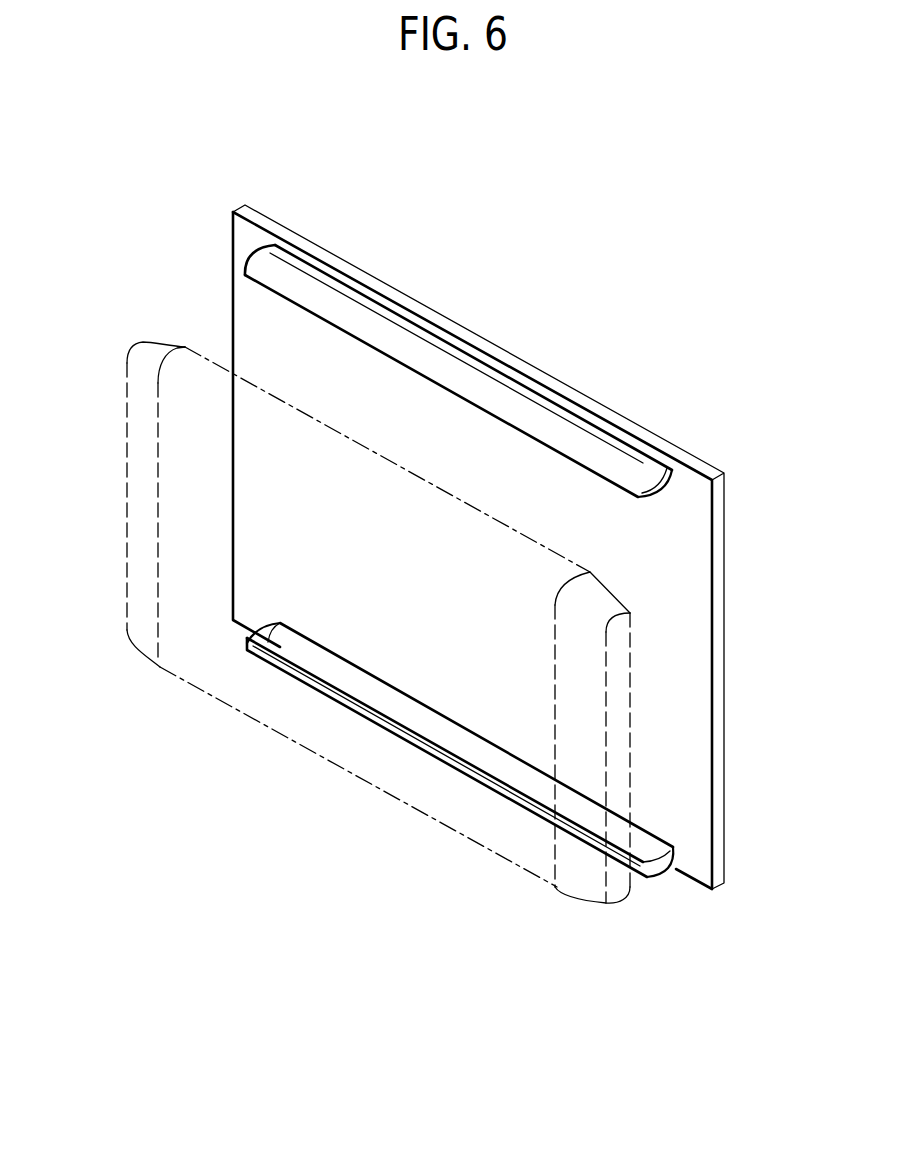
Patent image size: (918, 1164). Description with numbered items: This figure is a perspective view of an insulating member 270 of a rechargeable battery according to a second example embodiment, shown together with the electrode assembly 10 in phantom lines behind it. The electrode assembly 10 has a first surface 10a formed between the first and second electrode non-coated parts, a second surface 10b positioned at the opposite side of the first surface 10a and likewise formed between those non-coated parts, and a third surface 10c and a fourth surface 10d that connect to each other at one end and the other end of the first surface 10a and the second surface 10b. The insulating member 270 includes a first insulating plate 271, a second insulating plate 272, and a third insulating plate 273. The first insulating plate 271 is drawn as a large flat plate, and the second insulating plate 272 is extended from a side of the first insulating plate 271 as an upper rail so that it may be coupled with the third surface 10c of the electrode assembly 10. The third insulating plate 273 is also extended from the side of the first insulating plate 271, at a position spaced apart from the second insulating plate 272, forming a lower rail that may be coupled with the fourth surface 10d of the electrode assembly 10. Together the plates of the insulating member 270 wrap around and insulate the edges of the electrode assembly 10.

The electrode assembly 10 is at (343, 630).
The first surface 10a is at (212, 638).
The second surface 10b is at (412, 777).
The third surface 10c is at (210, 375).
The fourth surface 10d is at (572, 903).
The insulating member 270 is at (484, 586).
The first insulating plate 271 is at (672, 553).
The second insulating plate 272 is at (260, 263).
The third insulating plate 273 is at (657, 865).